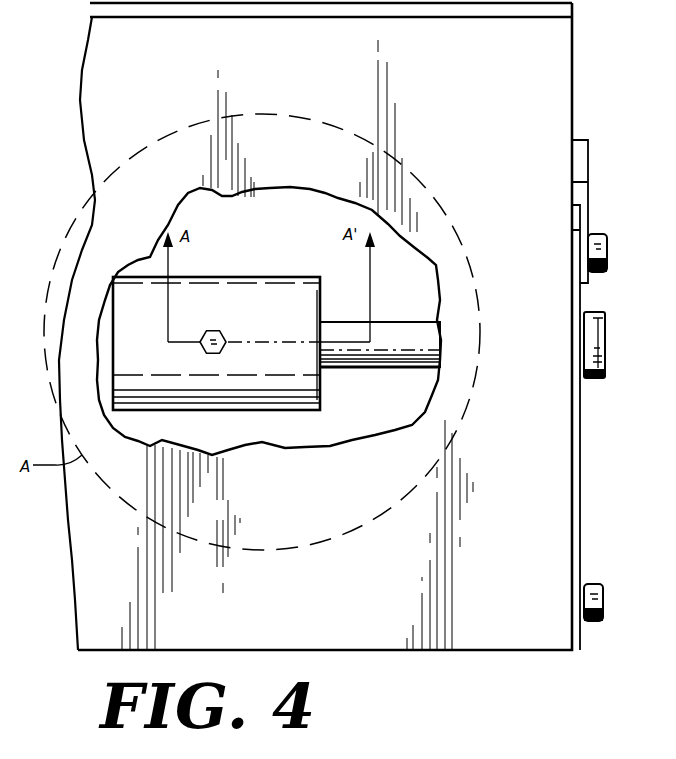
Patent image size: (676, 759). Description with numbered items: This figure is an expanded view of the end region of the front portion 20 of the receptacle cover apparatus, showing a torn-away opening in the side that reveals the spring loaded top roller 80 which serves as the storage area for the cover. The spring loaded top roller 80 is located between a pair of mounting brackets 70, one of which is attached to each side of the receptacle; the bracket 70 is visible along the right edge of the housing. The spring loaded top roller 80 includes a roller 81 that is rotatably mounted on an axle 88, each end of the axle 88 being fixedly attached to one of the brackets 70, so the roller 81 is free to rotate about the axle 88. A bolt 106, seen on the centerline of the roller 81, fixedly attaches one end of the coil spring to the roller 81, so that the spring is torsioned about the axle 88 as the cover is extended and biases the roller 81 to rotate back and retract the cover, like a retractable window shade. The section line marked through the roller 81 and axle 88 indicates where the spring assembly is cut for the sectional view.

The front portion 20 is at (592, 118).
The mounting bracket 70 is at (585, 298).
The axle 88 is at (604, 360).
The spring loaded top roller 80 is at (242, 413).
The roller 81 is at (267, 398).
The bolt 106 is at (207, 355).